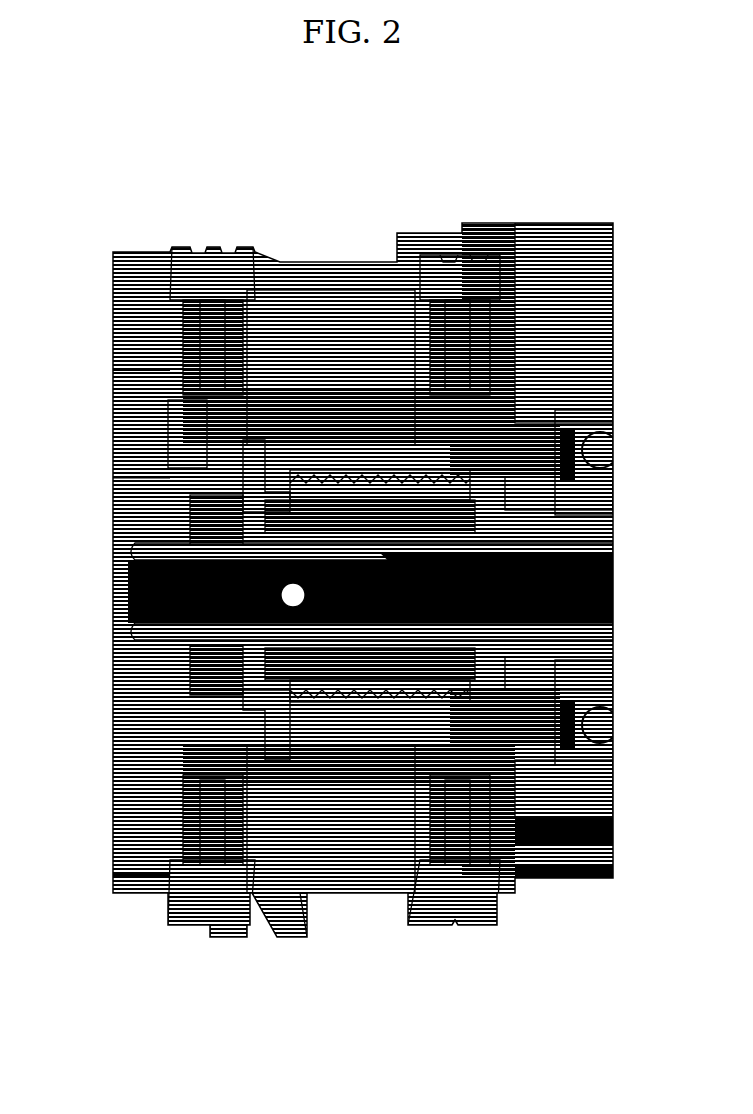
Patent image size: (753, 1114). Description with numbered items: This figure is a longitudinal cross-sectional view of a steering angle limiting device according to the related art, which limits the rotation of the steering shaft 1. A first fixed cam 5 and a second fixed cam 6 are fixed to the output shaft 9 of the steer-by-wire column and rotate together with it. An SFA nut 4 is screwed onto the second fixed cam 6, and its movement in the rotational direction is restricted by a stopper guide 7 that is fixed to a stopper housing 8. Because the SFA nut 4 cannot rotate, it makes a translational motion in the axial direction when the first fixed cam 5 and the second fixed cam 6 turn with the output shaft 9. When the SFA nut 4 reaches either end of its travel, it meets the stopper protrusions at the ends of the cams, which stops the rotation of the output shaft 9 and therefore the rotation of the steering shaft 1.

The steering shaft 1 is at (613, 588).
The SFA nut 4 is at (567, 420).
The first fixed cam 5 is at (113, 477).
The second fixed cam 6 is at (613, 520).
The stopper guide 7 is at (330, 325).
The stopper housing 8 is at (113, 350).
The output shaft 9 is at (113, 652).